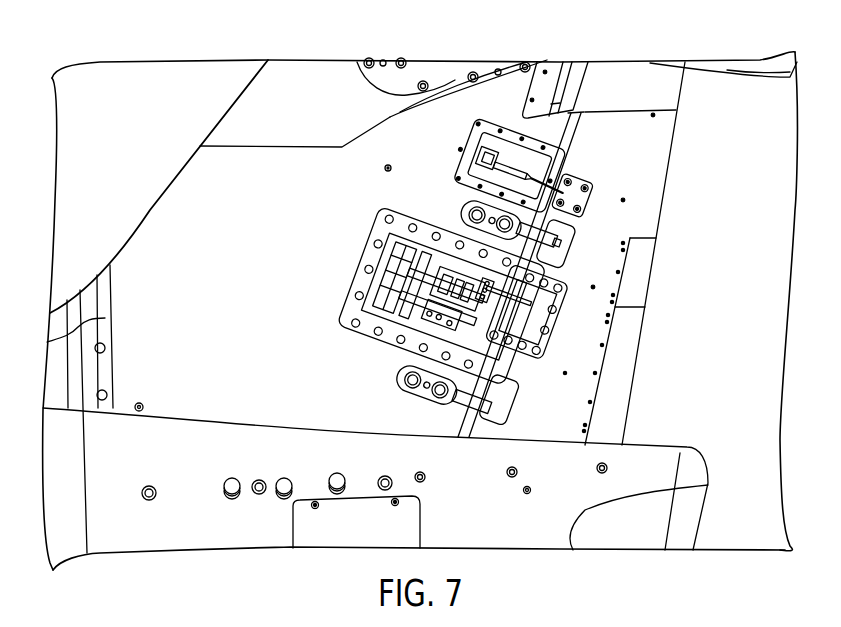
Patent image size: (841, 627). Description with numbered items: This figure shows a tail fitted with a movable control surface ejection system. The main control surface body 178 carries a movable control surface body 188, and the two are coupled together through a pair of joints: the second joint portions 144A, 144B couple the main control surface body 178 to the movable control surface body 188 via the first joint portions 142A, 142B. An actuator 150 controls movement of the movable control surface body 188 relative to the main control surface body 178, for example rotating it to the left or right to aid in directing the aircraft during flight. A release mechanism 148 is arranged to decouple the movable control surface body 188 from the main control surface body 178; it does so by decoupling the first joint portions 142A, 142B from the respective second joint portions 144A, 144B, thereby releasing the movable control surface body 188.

The main control surface body 178 is at (242, 90).
The actuator 150 is at (478, 167).
The second joint portion 144A is at (467, 214).
The release mechanism 148 is at (392, 263).
The second joint portion 144B is at (406, 378).
The first joint portion 142A is at (568, 228).
The first joint portion 142B is at (508, 400).
The movable control surface body 188 is at (627, 370).